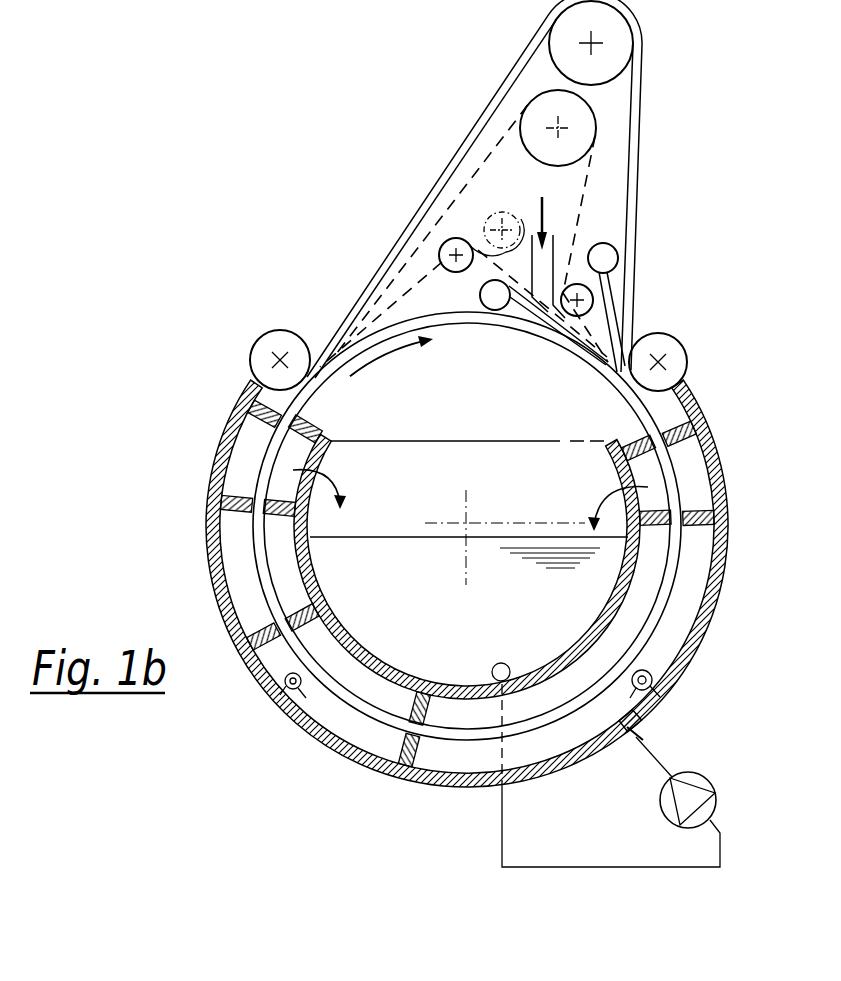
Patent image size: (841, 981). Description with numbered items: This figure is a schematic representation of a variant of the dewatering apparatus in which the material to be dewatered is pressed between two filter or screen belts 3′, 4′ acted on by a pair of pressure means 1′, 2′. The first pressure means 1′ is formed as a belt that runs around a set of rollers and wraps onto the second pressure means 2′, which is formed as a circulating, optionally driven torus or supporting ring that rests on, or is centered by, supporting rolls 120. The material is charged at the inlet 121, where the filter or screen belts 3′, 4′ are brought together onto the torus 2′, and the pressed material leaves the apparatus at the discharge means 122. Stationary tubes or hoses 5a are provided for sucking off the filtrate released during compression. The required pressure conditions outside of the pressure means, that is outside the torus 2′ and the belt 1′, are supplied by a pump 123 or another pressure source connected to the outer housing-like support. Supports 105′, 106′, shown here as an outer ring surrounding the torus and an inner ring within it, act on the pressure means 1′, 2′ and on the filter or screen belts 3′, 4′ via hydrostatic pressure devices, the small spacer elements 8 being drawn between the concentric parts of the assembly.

The pressure means 1′ is at (637, 102).
The pressure means 2′ is at (515, 323).
The filter or screen belt 3′ is at (588, 173).
The filter or screen belt 4′ is at (397, 290).
The stationary tubes or hoses 5a is at (619, 257).
The spacer tabs 8 is at (643, 443).
The support 105′ is at (208, 518).
The support 106′ is at (300, 618).
The supporting rolls 120 is at (296, 690).
The material charging point 121 is at (553, 237).
The discharge means 122 is at (500, 213).
The pump 123 is at (692, 776).